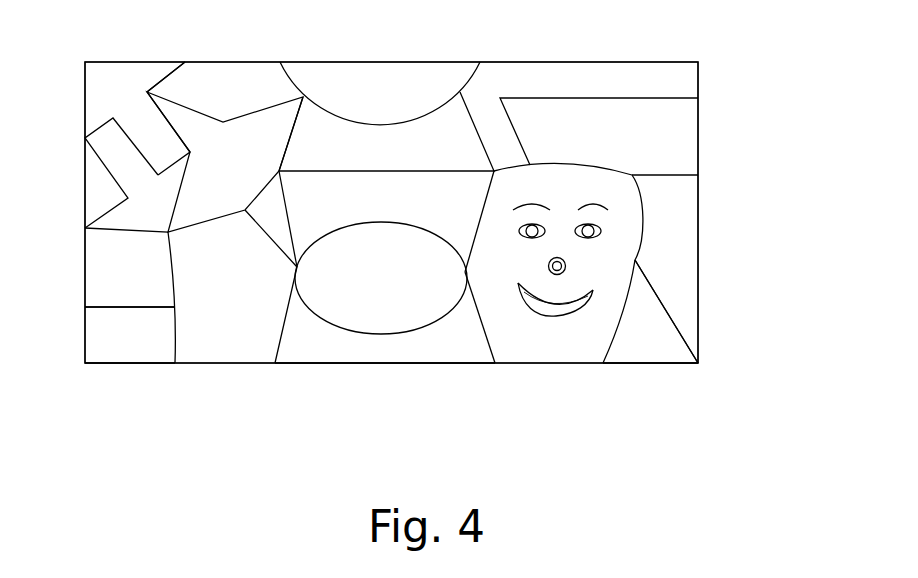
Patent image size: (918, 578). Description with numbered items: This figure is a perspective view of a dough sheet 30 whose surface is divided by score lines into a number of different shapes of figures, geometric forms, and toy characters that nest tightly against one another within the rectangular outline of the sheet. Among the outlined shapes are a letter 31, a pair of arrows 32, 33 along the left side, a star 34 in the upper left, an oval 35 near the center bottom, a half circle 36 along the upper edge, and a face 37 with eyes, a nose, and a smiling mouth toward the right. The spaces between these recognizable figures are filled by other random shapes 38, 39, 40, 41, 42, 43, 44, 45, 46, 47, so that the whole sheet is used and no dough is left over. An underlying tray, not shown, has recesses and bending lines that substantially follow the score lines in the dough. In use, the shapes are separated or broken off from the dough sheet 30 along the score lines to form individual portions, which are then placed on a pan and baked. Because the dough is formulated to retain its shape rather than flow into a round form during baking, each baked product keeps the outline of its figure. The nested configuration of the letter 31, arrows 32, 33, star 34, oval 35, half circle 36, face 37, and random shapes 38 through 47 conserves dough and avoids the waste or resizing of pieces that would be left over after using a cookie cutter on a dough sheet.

The dough sheet 30 is at (738, 152).
The letter 31 is at (550, 82).
The arrow 32 is at (117, 88).
The arrow 33 is at (133, 214).
The star 34 is at (221, 180).
The oval 35 is at (367, 290).
The half circle 36 is at (371, 105).
The face 37 is at (550, 338).
The random shape 38 is at (111, 280).
The random shape 39 is at (111, 348).
The random shape 40 is at (211, 307).
The random shape 41 is at (207, 102).
The random shape 42 is at (389, 162).
The random shape 43 is at (377, 210).
The random shape 44 is at (599, 148).
The random shape 45 is at (654, 248).
The random shape 46 is at (632, 345).
The random shape 47 is at (388, 348).